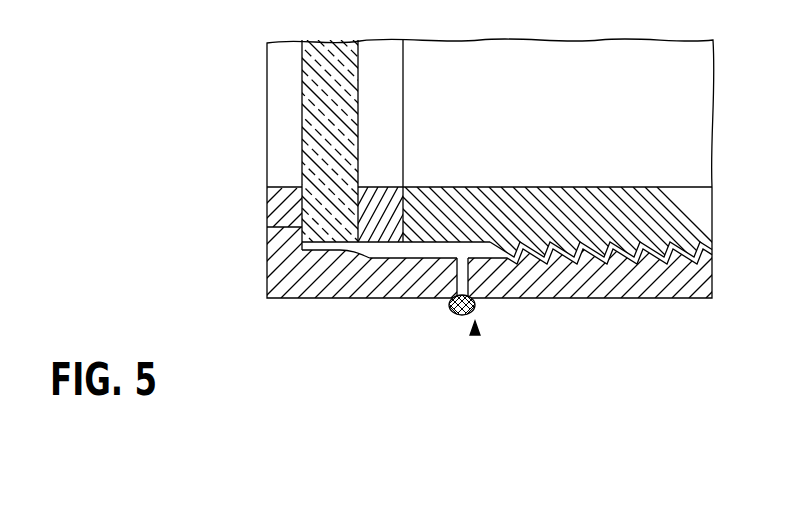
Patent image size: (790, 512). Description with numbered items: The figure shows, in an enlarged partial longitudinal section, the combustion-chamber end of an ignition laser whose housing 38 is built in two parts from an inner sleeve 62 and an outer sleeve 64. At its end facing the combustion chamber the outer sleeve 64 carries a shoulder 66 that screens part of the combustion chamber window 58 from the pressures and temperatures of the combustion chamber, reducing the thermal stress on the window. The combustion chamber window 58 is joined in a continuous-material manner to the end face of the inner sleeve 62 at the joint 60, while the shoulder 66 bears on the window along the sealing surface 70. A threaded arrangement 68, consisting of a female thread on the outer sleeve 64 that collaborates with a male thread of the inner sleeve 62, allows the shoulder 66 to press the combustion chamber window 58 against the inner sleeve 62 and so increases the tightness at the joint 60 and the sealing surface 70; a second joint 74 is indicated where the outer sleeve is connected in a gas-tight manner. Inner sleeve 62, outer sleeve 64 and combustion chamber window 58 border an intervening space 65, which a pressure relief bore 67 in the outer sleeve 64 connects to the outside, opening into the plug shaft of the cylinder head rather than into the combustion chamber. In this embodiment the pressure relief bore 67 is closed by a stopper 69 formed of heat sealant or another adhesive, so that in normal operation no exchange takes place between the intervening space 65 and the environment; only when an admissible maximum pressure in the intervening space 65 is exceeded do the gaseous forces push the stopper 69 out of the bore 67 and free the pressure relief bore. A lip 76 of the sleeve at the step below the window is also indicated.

The housing 38 is at (475, 333).
The combustion chamber window 58 is at (325, 120).
The joint 60 is at (372, 225).
The inner sleeve 62 is at (530, 249).
The outer sleeve 64 is at (608, 275).
The intervening space 65 is at (438, 248).
The shoulder 66 is at (287, 202).
The pressure relief bore 67 is at (465, 276).
The threaded arrangement 68 is at (650, 264).
The stopper 69 is at (452, 313).
The sealing surface 70 is at (470, 333).
The second joint 74 is at (418, 215).
The step 76 is at (380, 244).